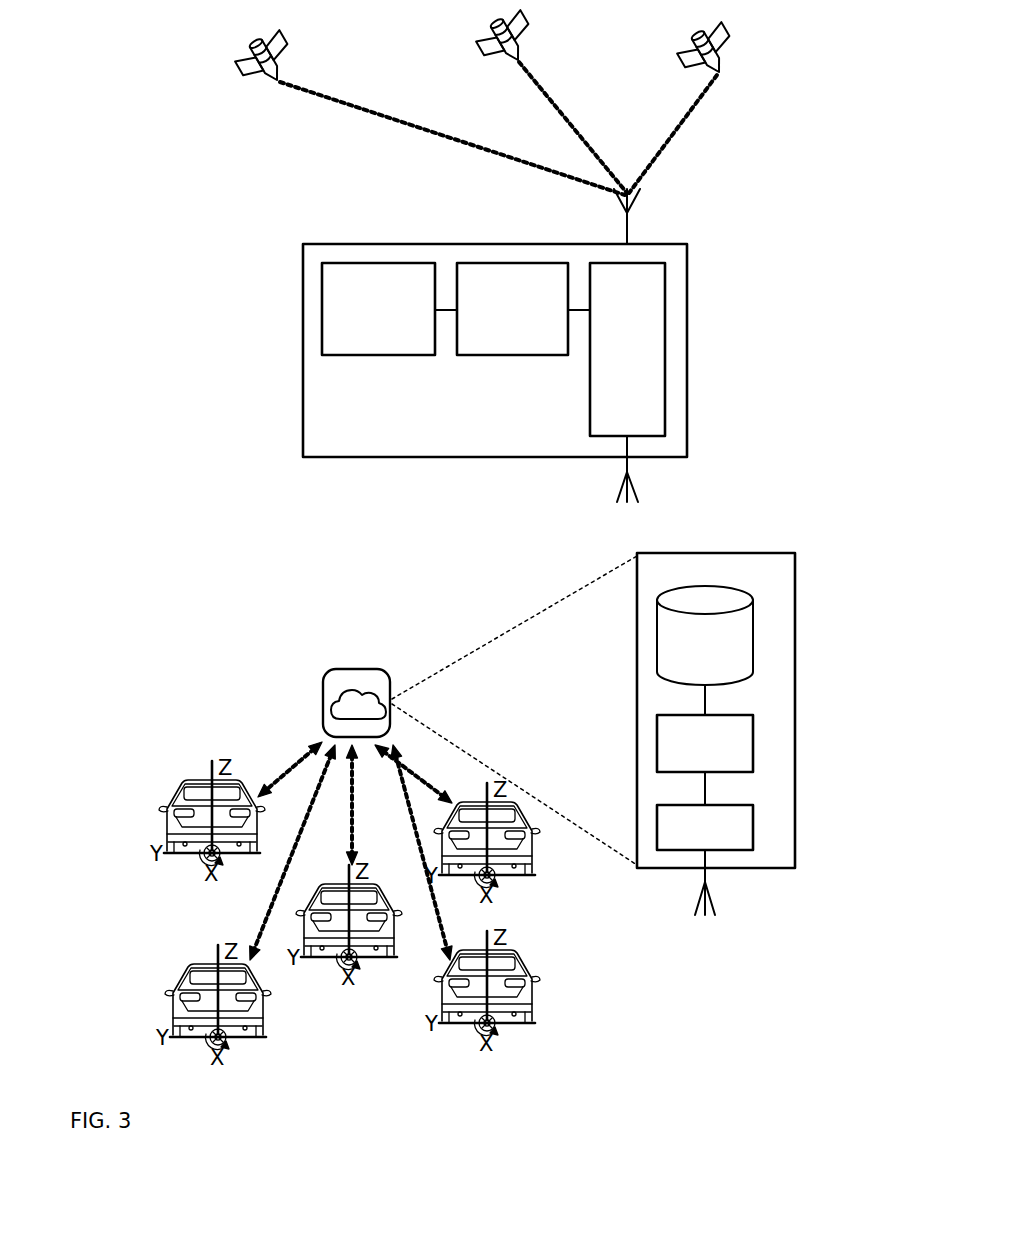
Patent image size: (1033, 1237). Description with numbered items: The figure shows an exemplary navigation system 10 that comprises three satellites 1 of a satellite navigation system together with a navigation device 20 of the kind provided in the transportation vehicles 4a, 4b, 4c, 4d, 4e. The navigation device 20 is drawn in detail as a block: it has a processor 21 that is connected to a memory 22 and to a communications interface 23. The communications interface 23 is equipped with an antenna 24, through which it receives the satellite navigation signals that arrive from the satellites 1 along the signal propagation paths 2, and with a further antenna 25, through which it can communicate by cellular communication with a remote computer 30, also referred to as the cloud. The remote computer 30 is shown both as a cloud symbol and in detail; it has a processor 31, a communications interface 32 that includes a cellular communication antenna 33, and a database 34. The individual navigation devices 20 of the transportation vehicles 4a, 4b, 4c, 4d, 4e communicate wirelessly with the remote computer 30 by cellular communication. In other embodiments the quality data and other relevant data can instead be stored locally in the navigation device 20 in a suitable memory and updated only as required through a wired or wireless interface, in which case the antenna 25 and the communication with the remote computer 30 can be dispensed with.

The satellite 1 is at (262, 39).
The signal propagation path 2 is at (333, 99).
The navigation system 10 is at (228, 511).
The navigation device 20 is at (495, 327).
The processor 21 is at (512, 309).
The memory 22 is at (378, 309).
The communications interface 23 is at (627, 349).
The antenna 24 is at (627, 233).
The antenna 25 is at (627, 470).
The remote computer 30 is at (559, 715).
The processor 31 is at (705, 743).
The communications interface 32 is at (705, 827).
The cellular communication antenna 33 is at (705, 880).
The database 34 is at (705, 635).
The transportation vehicle 4a is at (183, 792).
The transportation vehicle 4b is at (190, 971).
The transportation vehicle 4c is at (392, 932).
The transportation vehicle 4d is at (527, 848).
The transportation vehicle 4e is at (528, 995).